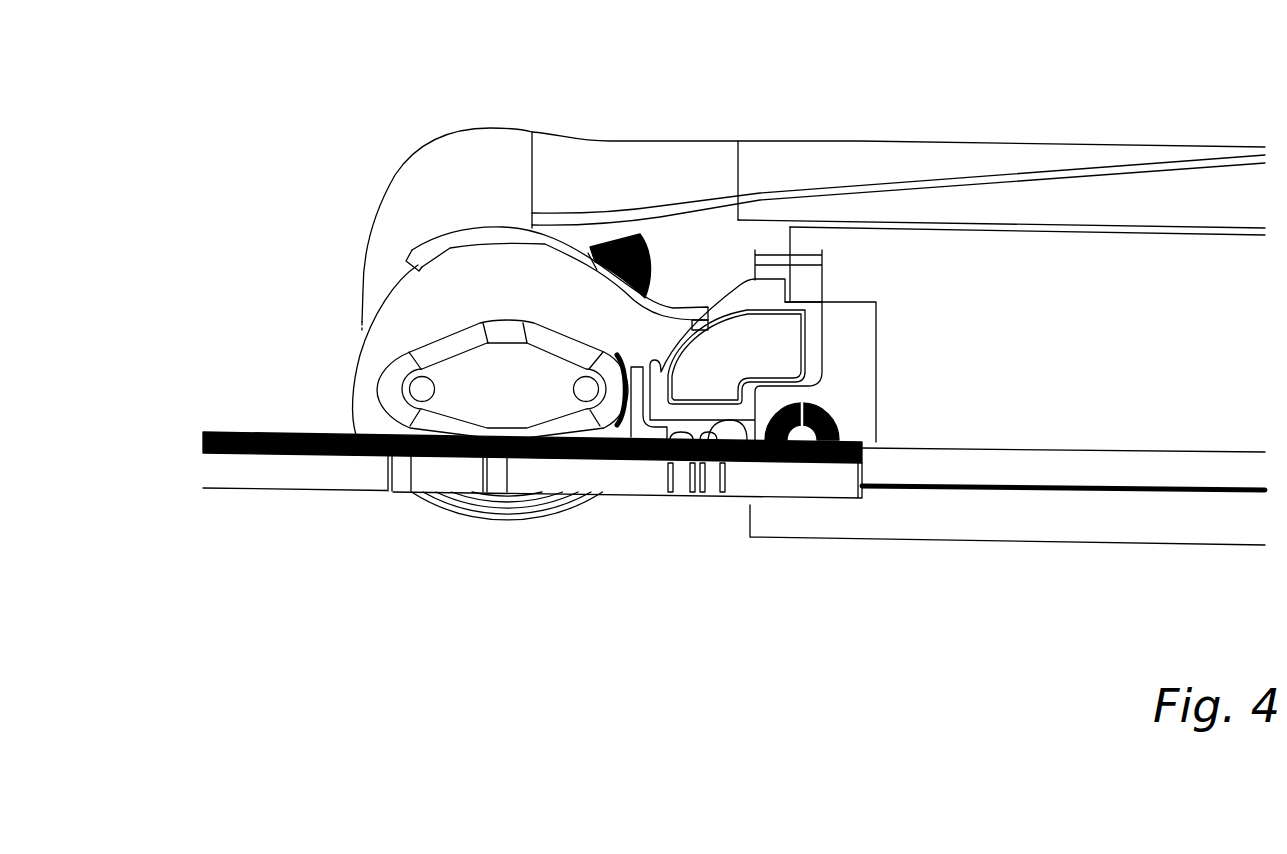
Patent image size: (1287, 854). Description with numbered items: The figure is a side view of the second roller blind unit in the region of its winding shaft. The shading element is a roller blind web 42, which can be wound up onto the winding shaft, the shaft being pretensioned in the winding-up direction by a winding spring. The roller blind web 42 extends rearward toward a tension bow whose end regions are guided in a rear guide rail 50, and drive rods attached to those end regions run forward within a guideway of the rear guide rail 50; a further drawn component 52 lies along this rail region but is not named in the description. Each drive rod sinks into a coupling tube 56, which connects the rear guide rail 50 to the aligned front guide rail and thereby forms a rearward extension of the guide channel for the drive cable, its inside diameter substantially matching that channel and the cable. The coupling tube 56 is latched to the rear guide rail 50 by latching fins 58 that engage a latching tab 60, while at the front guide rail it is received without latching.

The roller blind web 42 is at (1208, 183).
The rear guide rail 50 is at (1093, 530).
The strip 52 is at (1210, 473).
The coupling tube 56 is at (347, 478).
The latching fins 58 is at (683, 500).
The latching tab 60 is at (733, 424).